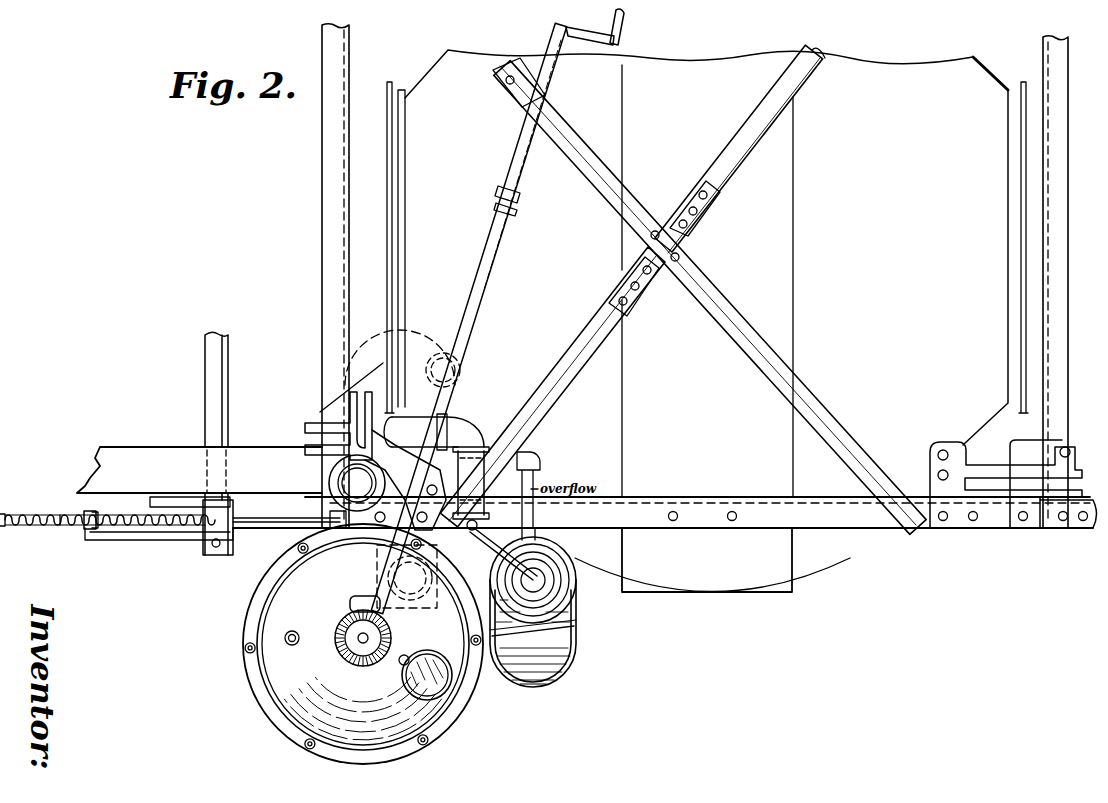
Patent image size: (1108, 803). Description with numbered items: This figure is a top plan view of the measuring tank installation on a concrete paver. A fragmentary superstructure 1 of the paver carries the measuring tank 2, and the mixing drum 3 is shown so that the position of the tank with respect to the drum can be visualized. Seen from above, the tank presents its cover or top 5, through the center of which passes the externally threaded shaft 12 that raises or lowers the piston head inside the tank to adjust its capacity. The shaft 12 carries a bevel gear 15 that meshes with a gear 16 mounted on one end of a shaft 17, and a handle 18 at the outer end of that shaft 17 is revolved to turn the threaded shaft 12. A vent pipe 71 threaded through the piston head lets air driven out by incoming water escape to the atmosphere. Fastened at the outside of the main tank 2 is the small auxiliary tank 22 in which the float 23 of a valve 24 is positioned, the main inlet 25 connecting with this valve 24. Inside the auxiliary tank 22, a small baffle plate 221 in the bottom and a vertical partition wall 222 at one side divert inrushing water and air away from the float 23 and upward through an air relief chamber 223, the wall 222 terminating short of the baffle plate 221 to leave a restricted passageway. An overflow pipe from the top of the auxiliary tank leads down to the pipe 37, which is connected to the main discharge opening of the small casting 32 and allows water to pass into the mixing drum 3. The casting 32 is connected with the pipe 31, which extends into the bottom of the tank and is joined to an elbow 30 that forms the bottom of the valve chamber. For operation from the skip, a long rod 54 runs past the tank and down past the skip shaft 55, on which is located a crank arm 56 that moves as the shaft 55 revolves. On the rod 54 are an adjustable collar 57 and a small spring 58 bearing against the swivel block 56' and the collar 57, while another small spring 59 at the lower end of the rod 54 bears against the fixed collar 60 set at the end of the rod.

The superstructure 1 is at (885, 528).
The measuring tank 2 is at (255, 697).
The mixing drum 3 is at (718, 575).
The cover or top 5 is at (397, 720).
The externally threaded shaft 12 is at (356, 646).
The bevel gear 15 is at (348, 630).
The gear 16 is at (360, 598).
The shaft 17 is at (480, 302).
The handle 18 is at (621, 27).
The auxiliary tank 22 is at (578, 566).
The baffle plate 221 is at (580, 642).
The vertical partition wall 222 is at (560, 660).
The air relief chamber 223 is at (528, 687).
The float 23 is at (578, 600).
The valve 24 is at (500, 528).
The main inlet 25 is at (412, 430).
The elbow 30 is at (560, 548).
The pipe 31 is at (468, 620).
The casting 32 is at (377, 548).
The pipe 37 is at (363, 367).
The long rod 54 is at (276, 522).
The skip shaft 55 is at (205, 418).
The crank arm 56 is at (119, 544).
The swivel block 56' is at (65, 506).
The adjustable collar 57 is at (328, 490).
The spring 58 is at (135, 512).
The spring 59 is at (60, 527).
The fixed collar 60 is at (2, 520).
The vent pipe 71 is at (285, 635).